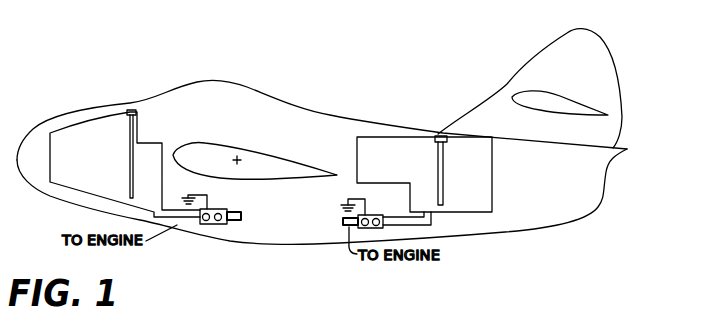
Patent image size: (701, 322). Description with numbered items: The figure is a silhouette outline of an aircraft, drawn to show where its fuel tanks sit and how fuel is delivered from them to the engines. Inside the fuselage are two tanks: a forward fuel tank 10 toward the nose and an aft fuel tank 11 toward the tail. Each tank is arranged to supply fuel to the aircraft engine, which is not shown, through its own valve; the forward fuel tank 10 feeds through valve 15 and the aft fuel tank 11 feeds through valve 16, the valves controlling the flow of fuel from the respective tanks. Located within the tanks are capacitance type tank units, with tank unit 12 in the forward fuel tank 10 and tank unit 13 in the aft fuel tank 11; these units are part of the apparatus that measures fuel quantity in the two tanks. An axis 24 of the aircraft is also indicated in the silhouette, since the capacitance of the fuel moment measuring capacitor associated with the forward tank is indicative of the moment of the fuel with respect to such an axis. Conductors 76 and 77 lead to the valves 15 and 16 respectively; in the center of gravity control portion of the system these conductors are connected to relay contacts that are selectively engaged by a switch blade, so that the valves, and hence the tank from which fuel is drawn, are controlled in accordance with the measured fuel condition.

The forward fuel tank 10 is at (143, 125).
The aft fuel tank 11 is at (492, 168).
The capacitance type tank unit 12 is at (136, 111).
The capacitance type tank unit 13 is at (437, 134).
The valve 15 is at (221, 224).
The valve 16 is at (381, 214).
The axis 24 is at (238, 157).
The conductor 76 is at (217, 209).
The conductor 77 is at (375, 214).